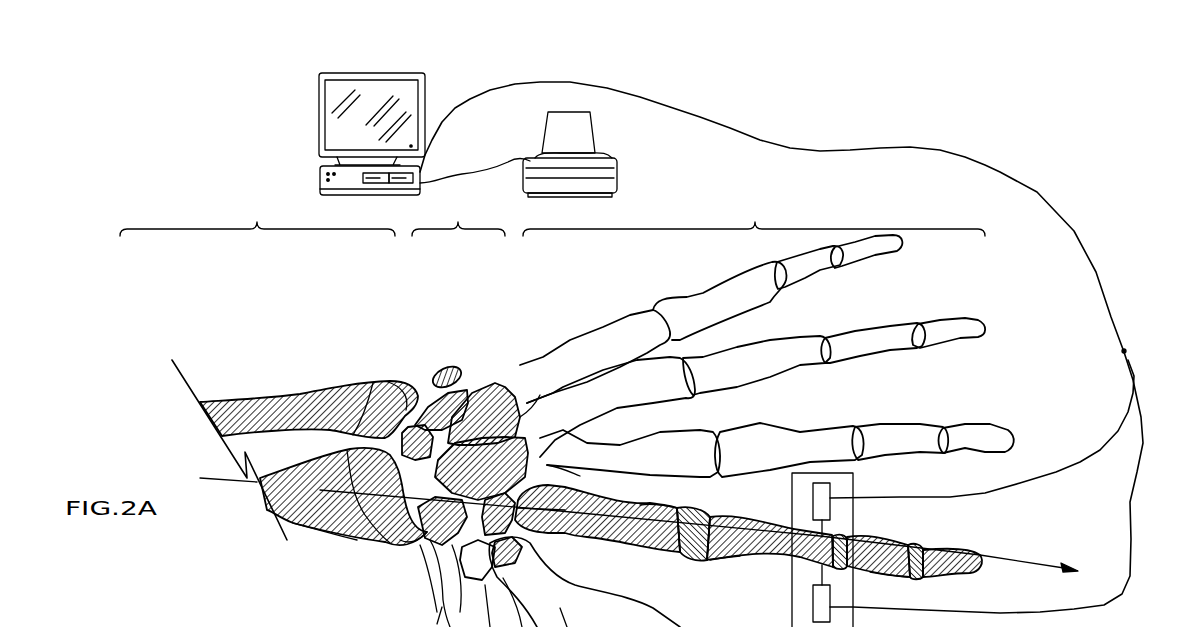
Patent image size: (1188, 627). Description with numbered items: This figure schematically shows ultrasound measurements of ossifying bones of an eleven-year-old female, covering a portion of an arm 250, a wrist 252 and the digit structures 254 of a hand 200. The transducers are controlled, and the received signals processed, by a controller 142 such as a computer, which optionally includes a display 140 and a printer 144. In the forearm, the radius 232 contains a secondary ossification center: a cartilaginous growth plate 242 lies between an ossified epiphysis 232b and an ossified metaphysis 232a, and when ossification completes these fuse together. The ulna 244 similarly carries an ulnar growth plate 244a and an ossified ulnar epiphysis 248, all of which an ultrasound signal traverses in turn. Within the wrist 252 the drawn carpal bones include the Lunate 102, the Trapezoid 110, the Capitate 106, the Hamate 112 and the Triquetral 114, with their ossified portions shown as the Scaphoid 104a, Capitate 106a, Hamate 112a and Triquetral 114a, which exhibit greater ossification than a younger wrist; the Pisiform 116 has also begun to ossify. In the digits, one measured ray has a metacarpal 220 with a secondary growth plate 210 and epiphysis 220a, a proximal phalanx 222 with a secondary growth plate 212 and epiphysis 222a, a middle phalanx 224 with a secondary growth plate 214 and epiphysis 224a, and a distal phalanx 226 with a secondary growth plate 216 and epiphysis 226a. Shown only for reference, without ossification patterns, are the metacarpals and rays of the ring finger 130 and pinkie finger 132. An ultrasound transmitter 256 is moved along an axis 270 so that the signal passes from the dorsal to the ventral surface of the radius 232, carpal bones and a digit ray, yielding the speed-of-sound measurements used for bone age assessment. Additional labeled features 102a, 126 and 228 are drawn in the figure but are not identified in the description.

The display 140 is at (318, 117).
The controller 142 is at (318, 185).
The printer 144 is at (522, 158).
The hand 200 is at (1037, 328).
The arm 250 is at (257, 218).
The wrist 252 is at (458, 218).
The digit structures 254 is at (754, 218).
The ulna 244 is at (335, 392).
The ulnar growth plate 244a is at (377, 378).
The ulnar epiphysis 248 is at (373, 382).
The radius 232 is at (321, 532).
The metaphysis 232a is at (357, 543).
The epiphysis 232b is at (400, 542).
The growth plate 242 is at (375, 525).
The Lunate 102 is at (428, 408).
The scaphoid surface 102a is at (367, 460).
The Scaphoid 104a is at (483, 576).
The Capitate 106 is at (572, 433).
The Capitate 106a is at (570, 478).
The Trapezoid 110 is at (537, 540).
The Hamate 112 is at (497, 384).
The Hamate 112a is at (528, 346).
The Triquetral 114 is at (413, 392).
The Triquetral 114a is at (472, 390).
The Pisiform 116 is at (452, 368).
The ring finger 130 is at (690, 362).
The pinkie finger 132 is at (638, 325).
The proximal phalanx 228 is at (697, 440).
The metacarpal 220 is at (630, 537).
The epiphysis 220a is at (688, 556).
The joint implant 126 is at (673, 547).
The secondary growth plate 210 is at (677, 510).
The secondary growth plate 212 is at (717, 520).
The proximal phalanx 222 is at (767, 558).
The epiphysis 222a is at (710, 562).
The secondary growth plate 214 is at (847, 537).
The middle phalanx 224 is at (887, 560).
The epiphysis 224a is at (787, 592).
The secondary growth plate 216 is at (923, 548).
The distal phalanx 226 is at (980, 567).
The epiphysis 226a is at (920, 548).
The ultrasound transmitter 256 is at (832, 495).
The axis 270 is at (1017, 558).